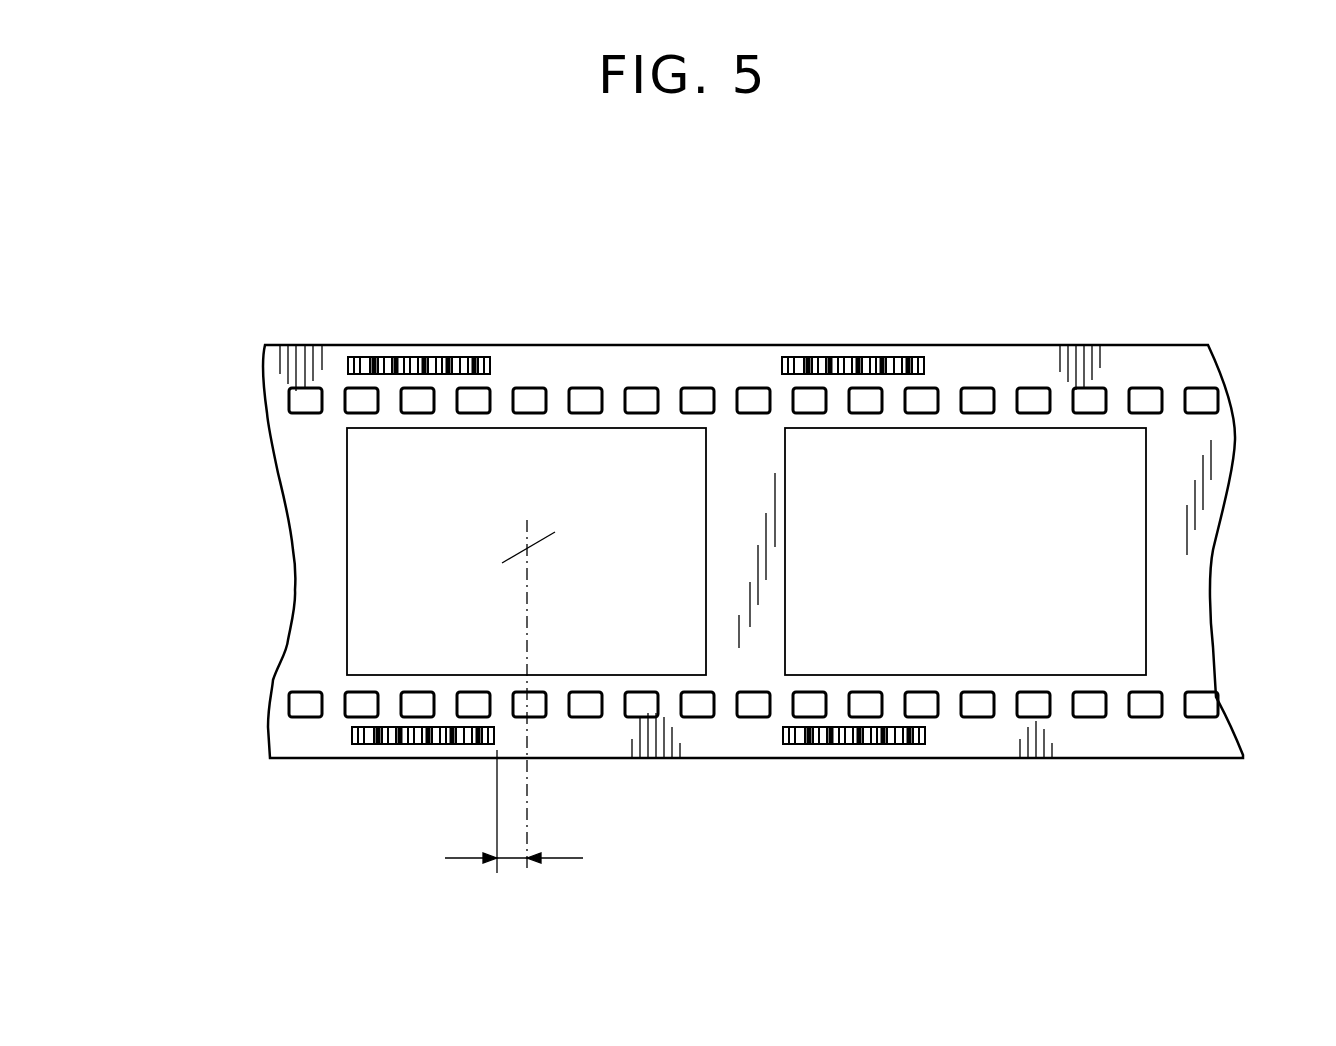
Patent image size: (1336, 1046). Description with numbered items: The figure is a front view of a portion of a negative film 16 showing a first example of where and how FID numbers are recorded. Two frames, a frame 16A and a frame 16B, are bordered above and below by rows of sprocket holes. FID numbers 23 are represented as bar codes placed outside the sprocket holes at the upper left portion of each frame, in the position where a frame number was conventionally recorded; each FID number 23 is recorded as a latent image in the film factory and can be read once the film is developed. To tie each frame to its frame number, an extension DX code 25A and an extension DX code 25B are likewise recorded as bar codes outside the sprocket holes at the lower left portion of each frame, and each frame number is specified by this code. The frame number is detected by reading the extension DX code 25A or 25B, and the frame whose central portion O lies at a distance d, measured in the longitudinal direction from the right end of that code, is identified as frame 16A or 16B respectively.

The negative film 16 is at (296, 474).
The frame 16A is at (375, 544).
The frame 16B is at (1105, 545).
The FID number 23 is at (503, 364).
The extension DX code 25A is at (343, 735).
The extension DX code 25B is at (773, 736).
The frame center O is at (532, 682).
The distance d is at (515, 858).